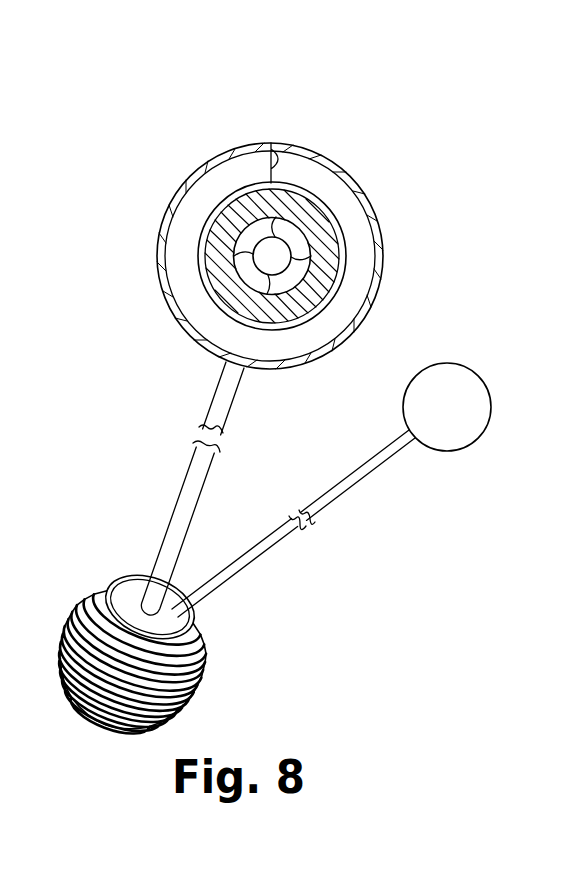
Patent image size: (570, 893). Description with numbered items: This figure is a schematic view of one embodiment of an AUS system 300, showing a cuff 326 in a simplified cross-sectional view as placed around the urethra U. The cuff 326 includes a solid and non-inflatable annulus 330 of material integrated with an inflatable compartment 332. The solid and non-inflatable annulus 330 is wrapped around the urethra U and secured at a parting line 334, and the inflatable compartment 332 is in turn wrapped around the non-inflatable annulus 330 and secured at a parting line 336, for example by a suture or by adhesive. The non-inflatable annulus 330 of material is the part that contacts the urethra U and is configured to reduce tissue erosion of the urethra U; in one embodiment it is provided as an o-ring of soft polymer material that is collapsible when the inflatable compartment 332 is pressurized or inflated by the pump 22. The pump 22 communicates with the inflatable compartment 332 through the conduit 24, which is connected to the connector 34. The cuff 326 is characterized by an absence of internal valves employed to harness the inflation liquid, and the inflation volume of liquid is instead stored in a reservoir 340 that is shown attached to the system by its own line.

The AUS system 300 is at (329, 87).
The cuff 326 is at (342, 165).
The inflatable compartment 332 is at (183, 262).
The parting line 336 is at (278, 146).
The solid and non-inflatable annulus 330 is at (222, 224).
The parting line 334 is at (242, 210).
The urethra U is at (306, 274).
The connector 34 is at (225, 397).
The conduit 24 is at (181, 513).
The reservoir 340 is at (476, 443).
The pump 22 is at (200, 653).